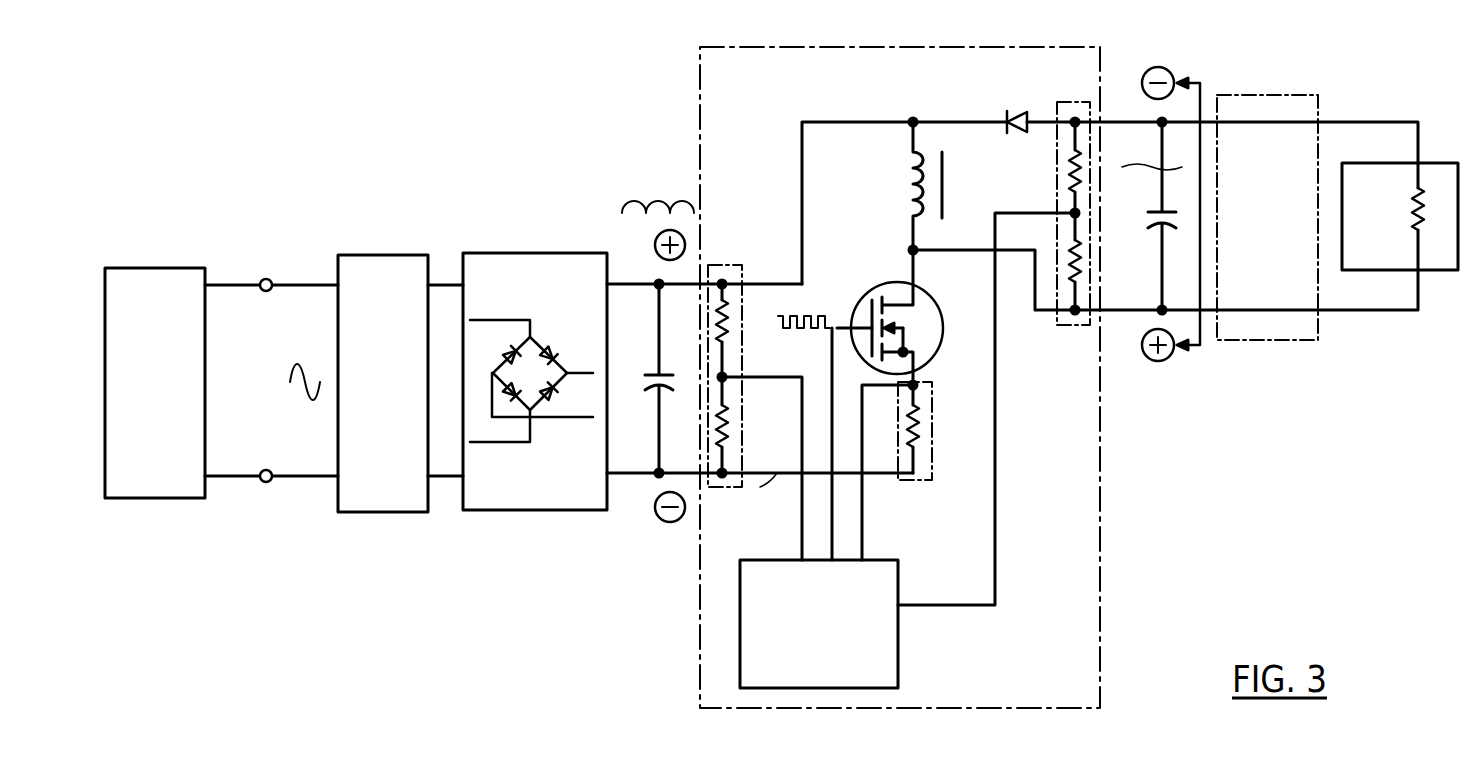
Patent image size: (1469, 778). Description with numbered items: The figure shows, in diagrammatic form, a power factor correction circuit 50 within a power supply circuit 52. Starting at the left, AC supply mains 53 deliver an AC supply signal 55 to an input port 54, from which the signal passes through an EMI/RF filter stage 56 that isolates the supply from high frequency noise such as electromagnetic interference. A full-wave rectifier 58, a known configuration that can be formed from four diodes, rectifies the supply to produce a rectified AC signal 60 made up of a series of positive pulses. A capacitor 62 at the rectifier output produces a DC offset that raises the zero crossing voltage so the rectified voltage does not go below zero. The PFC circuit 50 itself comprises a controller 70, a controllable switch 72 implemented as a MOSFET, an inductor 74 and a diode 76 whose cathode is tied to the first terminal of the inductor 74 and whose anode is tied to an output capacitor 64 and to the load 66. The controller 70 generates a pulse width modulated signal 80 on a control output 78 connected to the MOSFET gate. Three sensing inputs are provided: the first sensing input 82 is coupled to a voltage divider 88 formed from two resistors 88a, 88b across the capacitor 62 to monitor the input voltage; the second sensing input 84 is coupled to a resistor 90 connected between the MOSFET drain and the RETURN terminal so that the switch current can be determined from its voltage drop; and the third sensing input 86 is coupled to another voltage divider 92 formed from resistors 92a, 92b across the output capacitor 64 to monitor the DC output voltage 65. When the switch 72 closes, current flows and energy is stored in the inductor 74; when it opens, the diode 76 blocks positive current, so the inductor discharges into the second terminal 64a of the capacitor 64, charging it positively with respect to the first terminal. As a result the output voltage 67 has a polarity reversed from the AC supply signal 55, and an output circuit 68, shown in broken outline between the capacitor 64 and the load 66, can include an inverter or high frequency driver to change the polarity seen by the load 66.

The power factor correction circuit 50 is at (1104, 50).
The power supply circuit 52 is at (558, 573).
The AC supply mains 53 is at (167, 268).
The input port 54 is at (266, 278).
The AC supply signal 55 is at (307, 388).
The EMI/RF filter stage 56 is at (392, 255).
The full-wave rectifier 58 is at (553, 253).
The rectified AC signal 60 is at (643, 200).
The capacitor 62 is at (662, 372).
The output capacitor 64 is at (1160, 208).
The second terminal of the output capacitor 64a is at (1161, 308).
The DC output voltage 65 is at (1172, 167).
The load 66 is at (1443, 163).
The output voltage 67 is at (1177, 214).
The output circuit 68 is at (1270, 95).
The controller 70 is at (878, 560).
The controllable switch 72 is at (872, 285).
The inductor 74 is at (930, 155).
The diode 76 is at (1020, 110).
The control output 78 is at (834, 542).
The pulse width modulated signal 80 is at (815, 315).
The first sensing input 82 is at (765, 377).
The second sensing input 84 is at (862, 515).
The third sensing input 86 is at (945, 605).
The voltage divider 88 is at (751, 353).
The resistor 88a is at (730, 322).
The resistor 88b is at (730, 427).
The resistor 90 is at (928, 410).
The voltage divider 92 is at (1074, 232).
The resistor 92a is at (1062, 157).
The resistor 92b is at (1080, 262).